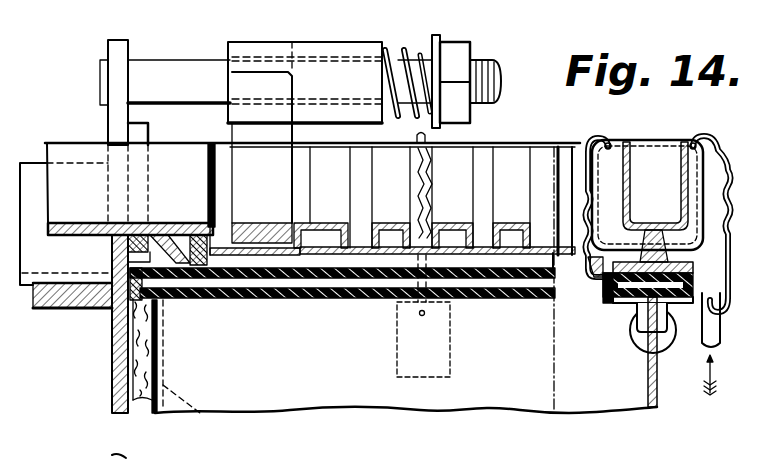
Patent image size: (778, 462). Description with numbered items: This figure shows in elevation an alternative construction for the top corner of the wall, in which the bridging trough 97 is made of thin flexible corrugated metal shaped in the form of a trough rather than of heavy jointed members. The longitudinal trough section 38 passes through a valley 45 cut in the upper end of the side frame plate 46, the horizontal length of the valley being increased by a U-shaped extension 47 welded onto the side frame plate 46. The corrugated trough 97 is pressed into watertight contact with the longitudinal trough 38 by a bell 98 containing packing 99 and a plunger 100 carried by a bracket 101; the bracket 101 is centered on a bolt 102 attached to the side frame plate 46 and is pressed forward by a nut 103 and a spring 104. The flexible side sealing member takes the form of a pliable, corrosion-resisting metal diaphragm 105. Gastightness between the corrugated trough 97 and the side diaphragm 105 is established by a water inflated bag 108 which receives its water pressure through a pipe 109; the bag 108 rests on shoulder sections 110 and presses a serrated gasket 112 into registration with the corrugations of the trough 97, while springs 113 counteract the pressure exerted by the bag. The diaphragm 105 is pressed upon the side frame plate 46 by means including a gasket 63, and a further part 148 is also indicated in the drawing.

The longitudinal trough section 38 is at (72, 170).
The valley 45 is at (112, 250).
The side frame plate 46 is at (112, 455).
The U-shaped extension 47 is at (146, 226).
The gasket 63 is at (118, 362).
The bridging trough 97 is at (480, 147).
The bell 98 is at (200, 262).
The packing 99 is at (200, 213).
The plunger 100 is at (273, 280).
The bracket 101 is at (330, 47).
The bolt 102 is at (173, 54).
The nut 103 is at (478, 52).
The spring 104 is at (412, 48).
The diaphragm 105 is at (233, 398).
The water inflated bag 108 is at (613, 281).
The pipe 109 is at (720, 327).
The shoulder section 110 is at (403, 328).
The serrated gasket 112 is at (652, 222).
The spring 113 is at (423, 201).
The hatched bar 148 is at (125, 222).